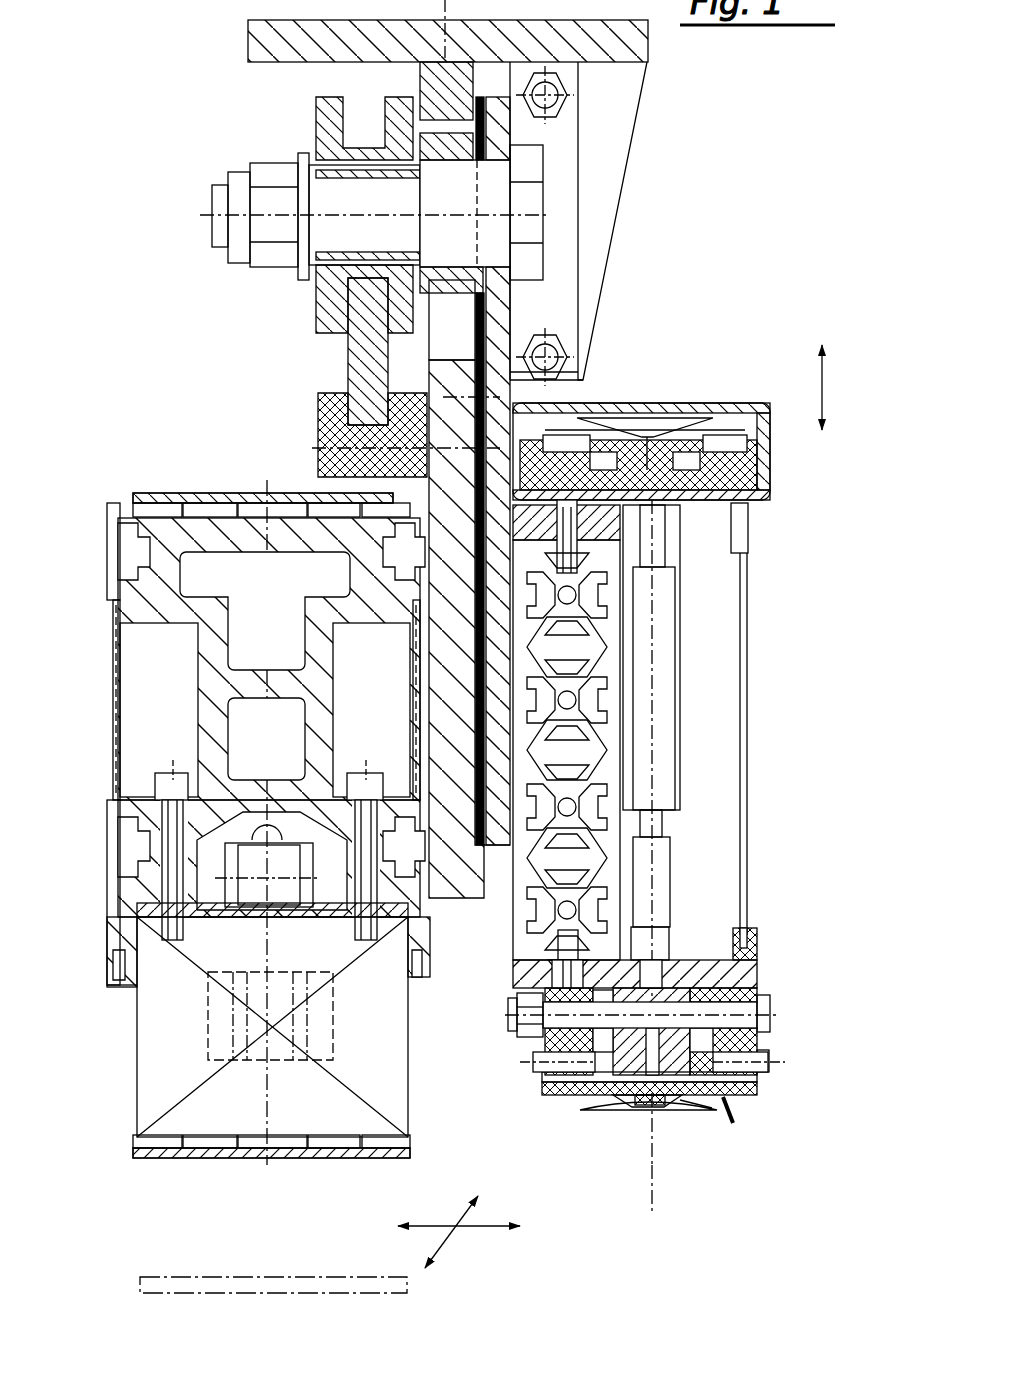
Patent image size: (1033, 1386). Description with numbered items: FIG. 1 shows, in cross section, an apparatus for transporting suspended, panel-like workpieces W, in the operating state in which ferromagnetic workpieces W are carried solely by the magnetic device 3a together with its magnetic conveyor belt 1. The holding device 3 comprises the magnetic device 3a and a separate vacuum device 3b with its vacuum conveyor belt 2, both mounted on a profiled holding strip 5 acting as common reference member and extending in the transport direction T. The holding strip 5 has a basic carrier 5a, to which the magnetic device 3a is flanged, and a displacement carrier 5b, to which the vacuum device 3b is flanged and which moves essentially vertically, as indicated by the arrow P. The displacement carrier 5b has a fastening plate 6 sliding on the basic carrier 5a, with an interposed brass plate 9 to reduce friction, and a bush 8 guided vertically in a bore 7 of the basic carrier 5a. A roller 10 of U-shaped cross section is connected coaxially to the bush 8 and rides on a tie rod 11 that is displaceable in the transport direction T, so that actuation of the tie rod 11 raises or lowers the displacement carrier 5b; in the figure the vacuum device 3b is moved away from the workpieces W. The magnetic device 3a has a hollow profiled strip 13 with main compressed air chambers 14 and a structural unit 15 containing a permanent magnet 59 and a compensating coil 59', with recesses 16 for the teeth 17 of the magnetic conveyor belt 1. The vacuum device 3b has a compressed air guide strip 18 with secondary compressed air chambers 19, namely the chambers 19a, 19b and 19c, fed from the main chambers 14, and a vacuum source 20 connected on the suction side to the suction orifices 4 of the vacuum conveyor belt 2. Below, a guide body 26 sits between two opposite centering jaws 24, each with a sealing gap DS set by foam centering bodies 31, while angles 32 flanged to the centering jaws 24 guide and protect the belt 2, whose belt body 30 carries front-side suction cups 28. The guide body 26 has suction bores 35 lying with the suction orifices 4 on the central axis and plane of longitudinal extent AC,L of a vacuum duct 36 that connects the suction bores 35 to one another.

The magnetic conveyor belt 1 is at (190, 1162).
The vacuum conveyor belt 2 is at (727, 1103).
The holding device 3 is at (680, 166).
The magnetic device 3a is at (100, 764).
The vacuum device 3b is at (777, 577).
The suction orifices 4 is at (640, 1110).
The profiled holding strip 5 is at (180, 72).
The basic carrier 5a is at (147, 445).
The displacement carrier 5b is at (530, 302).
The fastening plate 6 is at (507, 833).
The bore 7 is at (440, 337).
The bush 8 is at (527, 118).
The brass plate 9 is at (562, 384).
The roller 10 is at (318, 108).
The tie rod 11 is at (318, 423).
The hollow profiled strip 13 is at (150, 588).
The main compressed air chambers 14 is at (304, 598).
The structural unit 15 is at (192, 1048).
The recesses 16 is at (757, 477).
The teeth 17 is at (723, 425).
The compressed air guide strip 18 is at (512, 938).
The secondary compressed air chambers 19 is at (612, 827).
The secondary compressed air chamber 19a is at (589, 873).
The secondary compressed air chamber 19b is at (589, 765).
The secondary compressed air chamber 19c is at (589, 662).
The vacuum source 20 is at (667, 620).
The centering jaws 24 is at (545, 1042).
The guide body 26 is at (590, 1100).
The suction cups 28 is at (667, 1110).
The belt body 30 is at (733, 1100).
The foam centering bodies 31 is at (707, 960).
The angles 32 is at (543, 1075).
The suction bores 35 is at (697, 1117).
The vacuum duct 36 is at (613, 1117).
The permanent magnet 59 is at (297, 1016).
The compensating coil 59' is at (256, 899).
The sealing gap DS is at (687, 1023).
The arrow P is at (824, 380).
The transport direction T is at (458, 1228).
The workpieces W is at (336, 1278).
The central axis and plane of longitudinal extent AC,L is at (655, 1160).